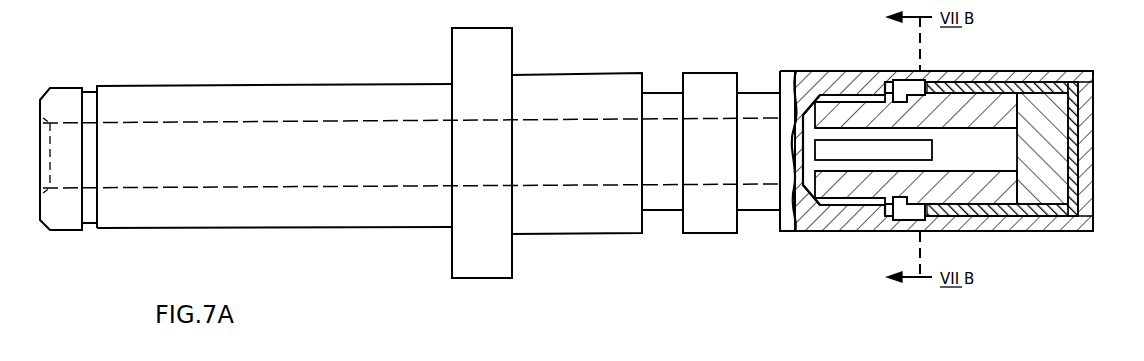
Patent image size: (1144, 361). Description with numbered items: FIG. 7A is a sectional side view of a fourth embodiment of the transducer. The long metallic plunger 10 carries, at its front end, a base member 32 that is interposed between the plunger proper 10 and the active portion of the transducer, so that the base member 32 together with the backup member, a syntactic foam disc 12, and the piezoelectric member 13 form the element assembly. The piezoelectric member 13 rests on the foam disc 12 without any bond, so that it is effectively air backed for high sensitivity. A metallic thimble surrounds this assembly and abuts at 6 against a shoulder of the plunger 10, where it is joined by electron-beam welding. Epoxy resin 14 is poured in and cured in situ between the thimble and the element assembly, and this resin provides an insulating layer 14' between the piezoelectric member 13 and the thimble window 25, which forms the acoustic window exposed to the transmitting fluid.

The plunger 10 is at (807, 218).
The abutment 6 is at (855, 226).
The base member 32 is at (942, 103).
The syntactic foam disc 12 is at (1047, 100).
The piezoelectric member 13 is at (1072, 150).
The epoxy resin 14 is at (1001, 174).
The insulating layer 14' is at (1108, 149).
The thimble window 25 is at (1087, 104).